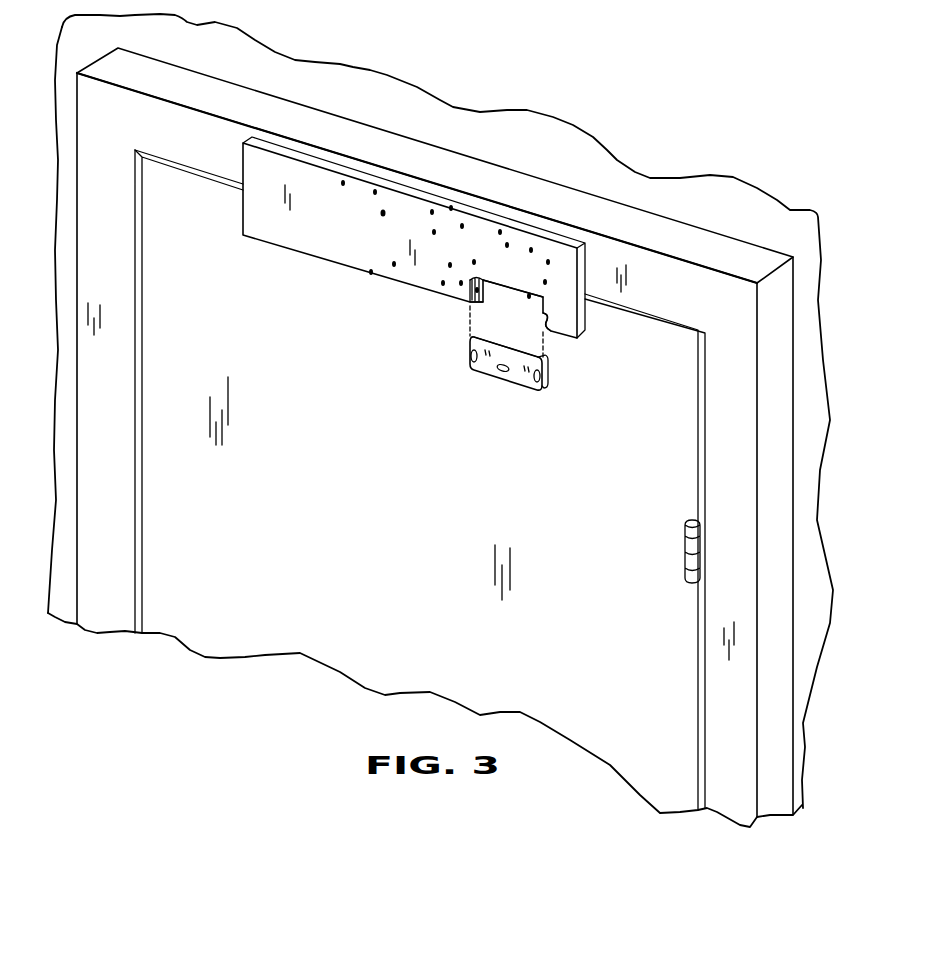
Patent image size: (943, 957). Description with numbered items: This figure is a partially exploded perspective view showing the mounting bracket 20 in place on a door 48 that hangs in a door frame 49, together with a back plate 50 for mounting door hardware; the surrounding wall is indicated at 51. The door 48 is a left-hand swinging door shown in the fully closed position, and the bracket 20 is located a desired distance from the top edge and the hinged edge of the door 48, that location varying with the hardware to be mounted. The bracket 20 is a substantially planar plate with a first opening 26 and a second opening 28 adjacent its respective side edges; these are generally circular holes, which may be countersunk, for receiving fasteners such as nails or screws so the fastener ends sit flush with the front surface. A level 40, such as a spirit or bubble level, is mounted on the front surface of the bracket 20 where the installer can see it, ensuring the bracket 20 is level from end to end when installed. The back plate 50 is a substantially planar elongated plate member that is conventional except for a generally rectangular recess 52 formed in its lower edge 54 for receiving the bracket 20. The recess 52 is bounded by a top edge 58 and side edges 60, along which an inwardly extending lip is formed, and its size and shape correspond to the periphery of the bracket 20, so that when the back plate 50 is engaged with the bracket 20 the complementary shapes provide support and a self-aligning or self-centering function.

The mounting bracket 20 is at (497, 383).
The first opening 26 is at (466, 348).
The second opening 28 is at (548, 384).
The level 40 is at (503, 373).
The door 48 is at (618, 782).
The door frame 49 is at (105, 618).
The back plate 50 is at (418, 186).
The wall 51 is at (607, 166).
The recess 52 is at (510, 301).
The lower edge 54 is at (415, 254).
The top edge 58 is at (490, 300).
The side edges 60 is at (469, 303).